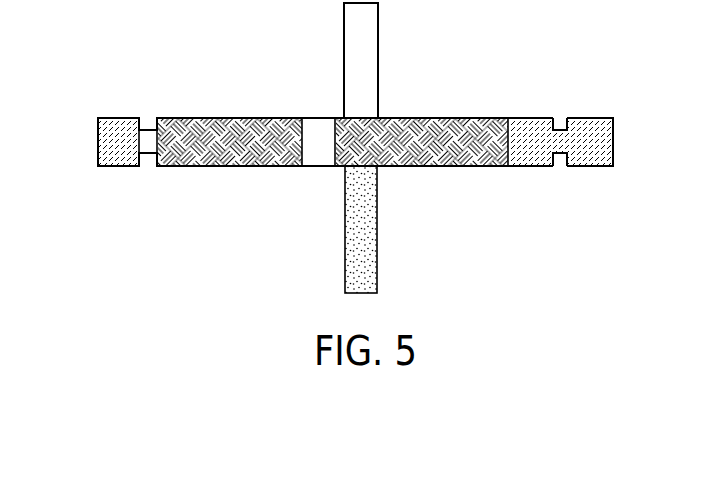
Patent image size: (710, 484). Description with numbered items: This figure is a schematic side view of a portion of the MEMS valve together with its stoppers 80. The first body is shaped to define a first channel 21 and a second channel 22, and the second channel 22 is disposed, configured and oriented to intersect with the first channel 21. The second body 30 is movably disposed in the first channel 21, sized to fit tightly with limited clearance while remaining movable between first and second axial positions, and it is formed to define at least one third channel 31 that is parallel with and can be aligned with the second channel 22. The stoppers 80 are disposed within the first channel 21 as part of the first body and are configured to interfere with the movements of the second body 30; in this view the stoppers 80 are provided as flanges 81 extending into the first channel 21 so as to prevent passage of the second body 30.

The first channel 21 is at (119, 120).
The second channel 22 is at (346, 58).
The second body 30 is at (422, 144).
The third channel 31 is at (317, 149).
The stoppers 80 is at (148, 163).
The flanges 81 is at (146, 121).